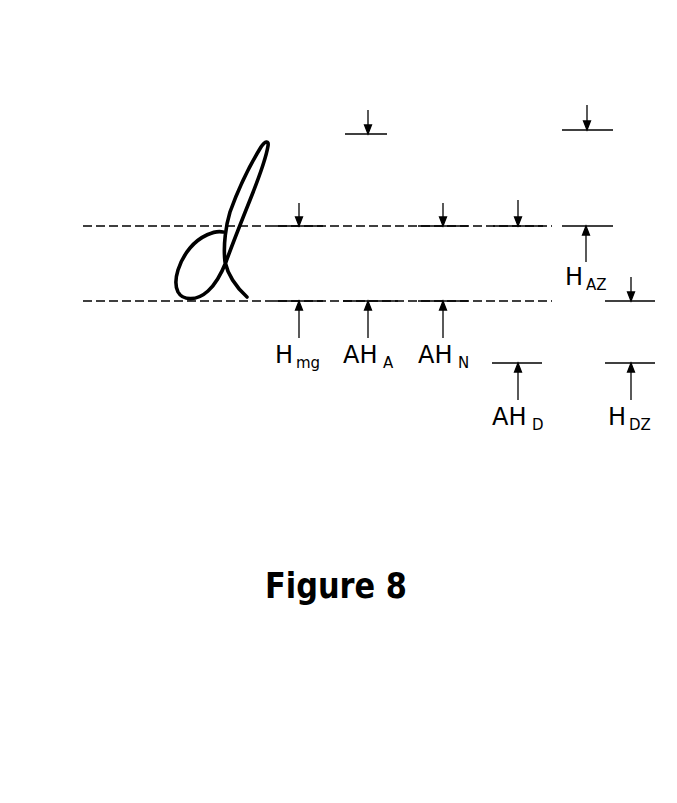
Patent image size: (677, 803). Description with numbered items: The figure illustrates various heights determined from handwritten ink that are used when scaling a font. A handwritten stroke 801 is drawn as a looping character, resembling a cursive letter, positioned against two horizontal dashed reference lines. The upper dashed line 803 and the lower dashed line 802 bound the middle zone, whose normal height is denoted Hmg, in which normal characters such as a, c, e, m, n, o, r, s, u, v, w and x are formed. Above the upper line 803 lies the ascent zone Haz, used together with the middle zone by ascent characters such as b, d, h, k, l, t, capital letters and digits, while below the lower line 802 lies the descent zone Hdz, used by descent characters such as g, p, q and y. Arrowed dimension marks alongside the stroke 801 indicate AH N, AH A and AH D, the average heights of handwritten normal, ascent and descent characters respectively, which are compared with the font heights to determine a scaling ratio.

The Lissajous-type trajectory loop 801 is at (245, 170).
The lower reference level line 802 is at (165, 301).
The upper reference level line 803 is at (160, 226).